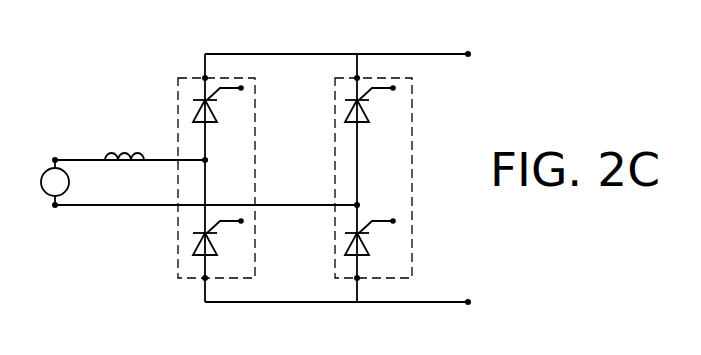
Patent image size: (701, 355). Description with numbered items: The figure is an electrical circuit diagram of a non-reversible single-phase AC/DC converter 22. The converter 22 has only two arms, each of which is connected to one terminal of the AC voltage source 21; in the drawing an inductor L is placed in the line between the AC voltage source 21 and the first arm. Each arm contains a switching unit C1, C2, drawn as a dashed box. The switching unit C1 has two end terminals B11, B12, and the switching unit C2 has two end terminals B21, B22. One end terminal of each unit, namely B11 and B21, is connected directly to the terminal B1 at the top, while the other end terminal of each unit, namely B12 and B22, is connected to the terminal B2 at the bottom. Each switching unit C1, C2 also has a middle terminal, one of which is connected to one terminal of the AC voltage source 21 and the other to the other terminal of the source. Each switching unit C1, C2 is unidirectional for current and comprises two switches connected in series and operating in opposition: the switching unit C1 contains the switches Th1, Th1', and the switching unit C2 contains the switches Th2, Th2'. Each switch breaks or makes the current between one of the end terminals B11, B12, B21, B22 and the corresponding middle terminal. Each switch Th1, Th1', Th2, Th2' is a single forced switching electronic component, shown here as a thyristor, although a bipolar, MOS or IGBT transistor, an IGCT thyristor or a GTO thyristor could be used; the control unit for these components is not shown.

The non-reversible single-phase AC/DC converter 22 is at (137, 93).
The AC voltage source 21 is at (51, 214).
The inductor L is at (122, 142).
The switching unit C1 is at (172, 251).
The switching unit C2 is at (400, 186).
The switch Th1 is at (218, 117).
The switch Th2 is at (370, 117).
The switch Th1' is at (218, 247).
The switch Th2' is at (373, 247).
The end terminal B11 is at (203, 76).
The end terminal B12 is at (203, 280).
The end terminal B21 is at (355, 76).
The end terminal B22 is at (355, 280).
The terminal B1 is at (470, 42).
The terminal B2 is at (470, 314).